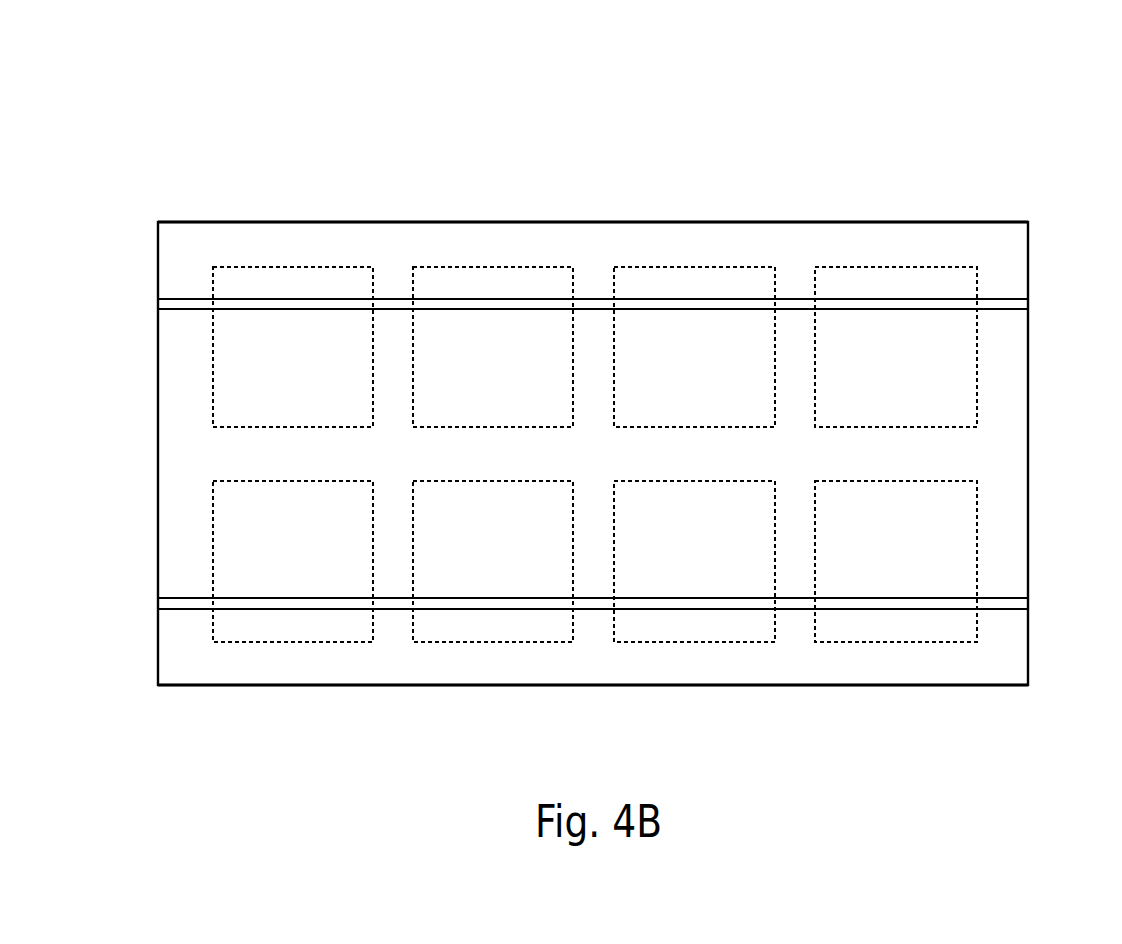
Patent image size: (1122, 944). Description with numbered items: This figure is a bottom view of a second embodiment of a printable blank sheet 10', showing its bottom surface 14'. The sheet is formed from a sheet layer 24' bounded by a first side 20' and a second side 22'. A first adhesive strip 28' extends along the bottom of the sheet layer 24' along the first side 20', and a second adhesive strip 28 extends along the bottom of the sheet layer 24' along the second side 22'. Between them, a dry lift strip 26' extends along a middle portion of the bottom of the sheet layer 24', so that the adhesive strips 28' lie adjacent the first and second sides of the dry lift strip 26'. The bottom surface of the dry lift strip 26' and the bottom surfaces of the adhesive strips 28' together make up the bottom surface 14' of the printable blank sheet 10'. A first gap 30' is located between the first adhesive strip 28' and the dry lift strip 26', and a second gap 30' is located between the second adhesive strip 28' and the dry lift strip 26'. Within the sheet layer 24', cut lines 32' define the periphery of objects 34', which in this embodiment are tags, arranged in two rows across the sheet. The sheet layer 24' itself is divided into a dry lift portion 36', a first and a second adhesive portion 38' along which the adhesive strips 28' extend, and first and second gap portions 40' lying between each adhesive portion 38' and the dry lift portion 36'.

The printable blank sheet 10' is at (555, 365).
The bottom surface 14' is at (493, 289).
The first side 20' is at (593, 708).
The second side 22' is at (593, 196).
The sheet layer 24' is at (481, 616).
The dry lift strip 26' is at (519, 561).
The adhesive strips 28' is at (545, 245).
The adhesive strip 28 is at (541, 665).
The gaps 30' is at (553, 452).
The cut lines 32' is at (385, 292).
The objects 34' is at (795, 283).
The dry lift portion 36' is at (1061, 488).
The adhesive portions 38' is at (1053, 454).
The gap portions 40' is at (635, 452).